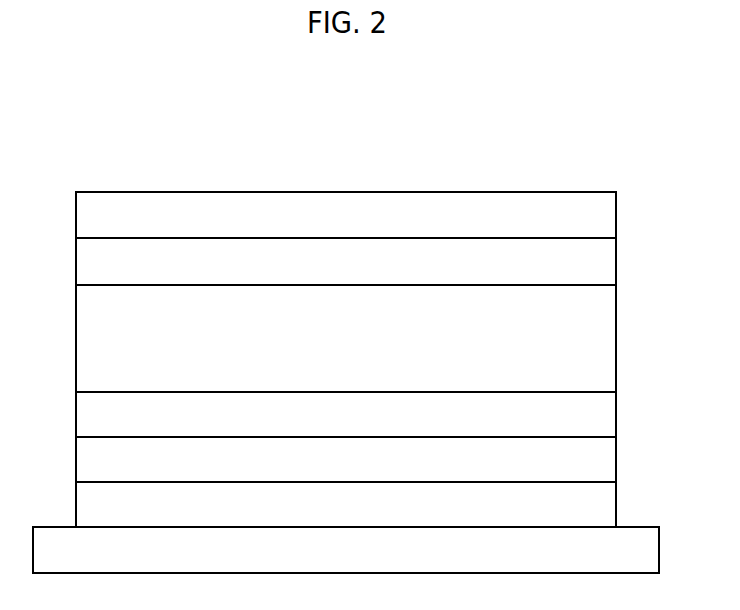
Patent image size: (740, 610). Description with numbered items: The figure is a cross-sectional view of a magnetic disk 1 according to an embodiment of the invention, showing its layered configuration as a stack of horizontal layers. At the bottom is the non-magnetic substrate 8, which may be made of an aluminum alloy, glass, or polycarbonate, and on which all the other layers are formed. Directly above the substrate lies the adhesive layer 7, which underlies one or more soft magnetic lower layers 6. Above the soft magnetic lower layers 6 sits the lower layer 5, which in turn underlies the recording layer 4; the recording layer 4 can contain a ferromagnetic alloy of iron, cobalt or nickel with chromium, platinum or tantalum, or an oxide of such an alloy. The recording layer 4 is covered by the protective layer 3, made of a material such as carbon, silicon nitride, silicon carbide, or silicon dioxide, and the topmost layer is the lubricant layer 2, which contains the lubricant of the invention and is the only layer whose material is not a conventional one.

The magnetic disk 1 is at (86, 148).
The lubricant layer 2 is at (346, 215).
The protective layer 3 is at (346, 261).
The recording layer 4 is at (346, 338).
The lower layer 5 is at (346, 414).
The soft magnetic lower layer 6 is at (346, 459).
The adhesive layer 7 is at (346, 504).
The non-magnetic substrate 8 is at (346, 550).